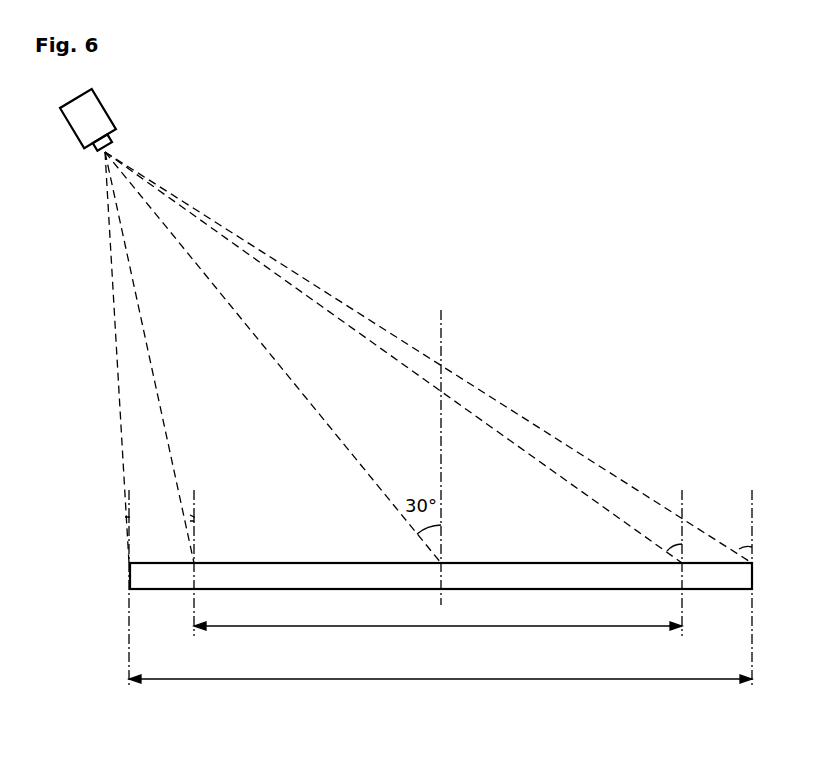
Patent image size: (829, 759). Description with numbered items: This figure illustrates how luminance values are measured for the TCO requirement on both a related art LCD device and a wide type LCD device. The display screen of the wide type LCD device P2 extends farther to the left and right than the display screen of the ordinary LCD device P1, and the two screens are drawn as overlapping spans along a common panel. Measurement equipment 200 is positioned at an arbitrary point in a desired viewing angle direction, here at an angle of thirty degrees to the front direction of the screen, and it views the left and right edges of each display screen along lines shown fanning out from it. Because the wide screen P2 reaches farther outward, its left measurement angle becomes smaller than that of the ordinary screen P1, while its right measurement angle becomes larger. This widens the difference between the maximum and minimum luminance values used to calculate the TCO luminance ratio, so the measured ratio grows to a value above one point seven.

The light source / camera unit 200 is at (104, 108).
The display screen of the ordinary LCD device P1 is at (438, 638).
The display screen of the wide type LCD device P2 is at (440, 692).